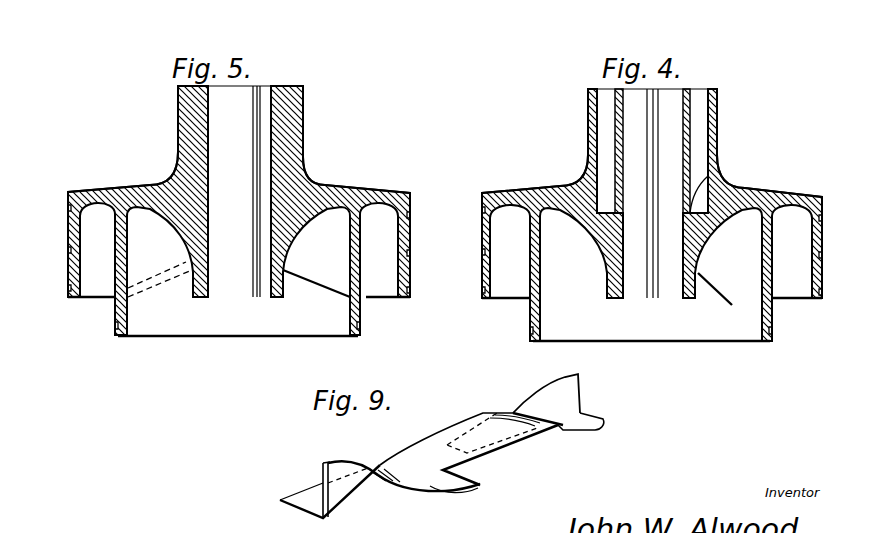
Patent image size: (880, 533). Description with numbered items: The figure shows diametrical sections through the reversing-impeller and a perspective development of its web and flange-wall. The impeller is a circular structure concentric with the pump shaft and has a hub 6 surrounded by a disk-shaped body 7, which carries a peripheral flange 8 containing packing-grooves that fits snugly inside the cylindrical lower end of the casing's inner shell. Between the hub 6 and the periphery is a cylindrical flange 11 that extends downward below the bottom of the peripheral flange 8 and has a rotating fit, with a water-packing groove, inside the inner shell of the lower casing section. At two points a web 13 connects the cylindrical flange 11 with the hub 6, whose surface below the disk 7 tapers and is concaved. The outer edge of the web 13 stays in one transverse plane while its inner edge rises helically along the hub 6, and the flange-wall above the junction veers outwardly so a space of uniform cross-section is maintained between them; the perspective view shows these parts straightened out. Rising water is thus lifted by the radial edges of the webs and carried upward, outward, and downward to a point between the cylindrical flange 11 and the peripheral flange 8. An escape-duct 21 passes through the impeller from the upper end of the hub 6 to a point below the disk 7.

In FIG. 5, the hub 6 is at (248, 191).
In FIG. 4, the hub 6 is at (588, 115).
In FIG. 5, the disk-shaped body 7 is at (153, 185).
In FIG. 4, the disk-shaped body 7 is at (573, 184).
In FIG. 5, the peripheral flange 8 is at (68, 236).
In FIG. 4, the peripheral flange 8 is at (482, 238).
In FIG. 5, the cylindrical flange 11 is at (118, 252).
In FIG. 4, the cylindrical flange 11 is at (651, 278).
In FIG. 5, the web 13 is at (329, 287).
In FIG. 4, the web 13 is at (739, 295).
In FIG. 4, the escape-duct 21 is at (702, 118).